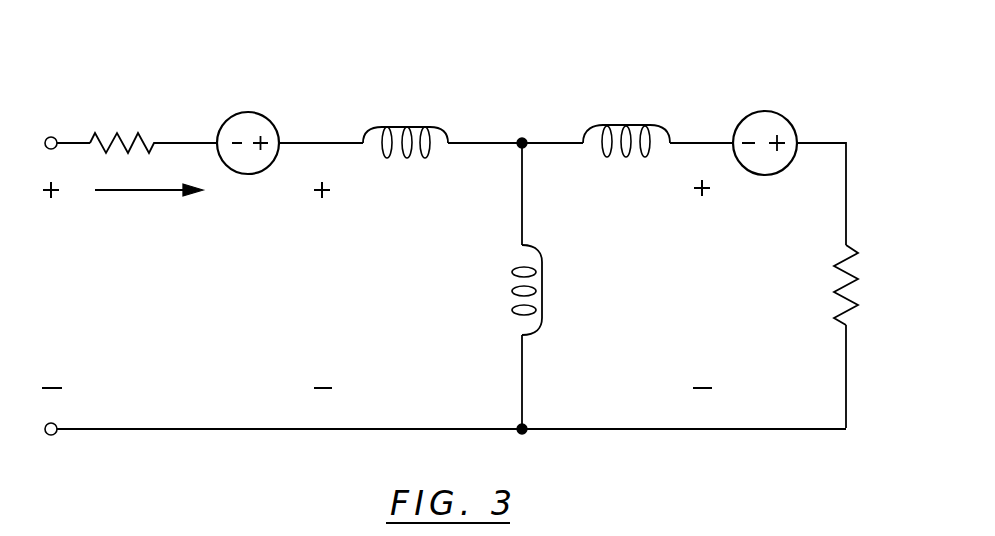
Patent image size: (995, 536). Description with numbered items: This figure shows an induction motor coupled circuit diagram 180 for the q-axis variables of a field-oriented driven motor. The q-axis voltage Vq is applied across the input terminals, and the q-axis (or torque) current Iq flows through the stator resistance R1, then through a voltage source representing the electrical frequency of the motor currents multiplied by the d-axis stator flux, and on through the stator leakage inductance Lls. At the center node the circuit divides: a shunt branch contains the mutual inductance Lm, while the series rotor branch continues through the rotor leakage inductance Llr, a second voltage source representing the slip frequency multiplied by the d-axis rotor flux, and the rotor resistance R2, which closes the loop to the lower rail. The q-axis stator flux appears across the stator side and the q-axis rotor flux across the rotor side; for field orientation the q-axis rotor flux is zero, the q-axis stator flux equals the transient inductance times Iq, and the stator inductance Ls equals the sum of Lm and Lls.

The coupled circuit diagram 180 is at (218, 43).
The stator resistance R1 is at (124, 128).
The rotor resistance R2 is at (864, 285).
The stator leakage inductance Lls is at (405, 125).
The rotor leakage inductance Llr is at (626, 124).
The mutual inductance Lm is at (509, 290).